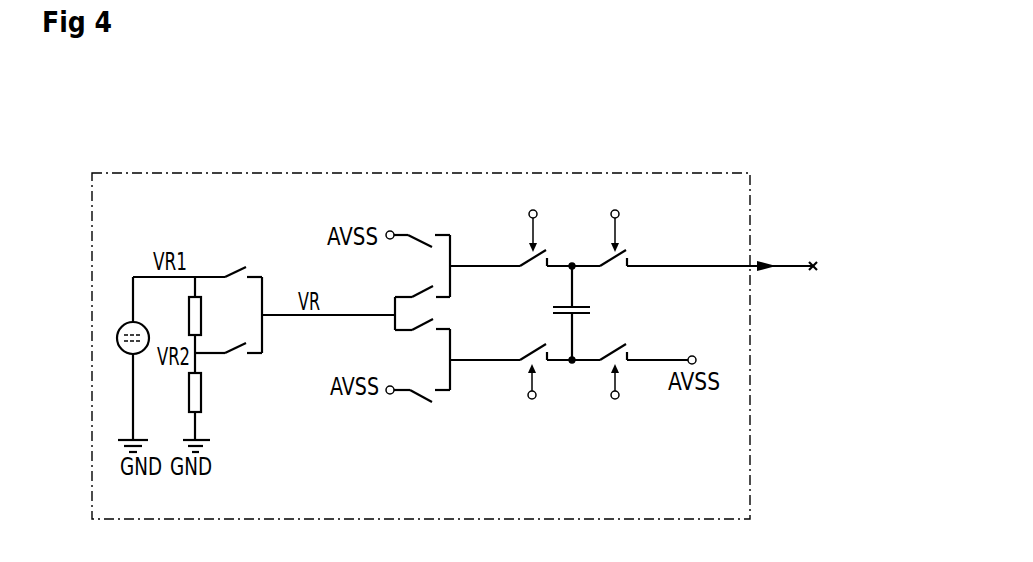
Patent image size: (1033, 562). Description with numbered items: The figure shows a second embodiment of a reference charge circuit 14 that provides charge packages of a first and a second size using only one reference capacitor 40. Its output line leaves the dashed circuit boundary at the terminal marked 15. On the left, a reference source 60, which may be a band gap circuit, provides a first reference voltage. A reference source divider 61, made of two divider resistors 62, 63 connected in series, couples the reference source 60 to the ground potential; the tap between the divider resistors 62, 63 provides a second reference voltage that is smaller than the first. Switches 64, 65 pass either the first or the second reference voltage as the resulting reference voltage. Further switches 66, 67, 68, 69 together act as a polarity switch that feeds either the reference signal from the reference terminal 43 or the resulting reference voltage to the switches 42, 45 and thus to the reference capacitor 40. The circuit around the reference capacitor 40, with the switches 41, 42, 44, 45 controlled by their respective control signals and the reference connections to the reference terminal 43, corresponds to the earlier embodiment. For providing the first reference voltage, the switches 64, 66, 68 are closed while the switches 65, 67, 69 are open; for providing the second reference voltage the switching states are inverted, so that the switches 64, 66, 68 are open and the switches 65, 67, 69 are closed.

The reference charge circuit 14 is at (559, 172).
The output terminal 15 is at (815, 265).
The reference capacitor 40 is at (553, 309).
The switch 41 is at (607, 261).
The switch 42 is at (525, 261).
The reference terminal 43 is at (389, 231).
The switch 44 is at (625, 350).
The switch 45 is at (523, 356).
The reference source 60 is at (145, 325).
The reference source divider 61 is at (229, 387).
The divider resistor 62 is at (203, 318).
The divider resistor 63 is at (203, 392).
The switch 64 is at (238, 270).
The switch 65 is at (240, 343).
The switch 66 is at (423, 239).
The switch 67 is at (419, 293).
The switch 68 is at (421, 326).
The switch 69 is at (428, 404).